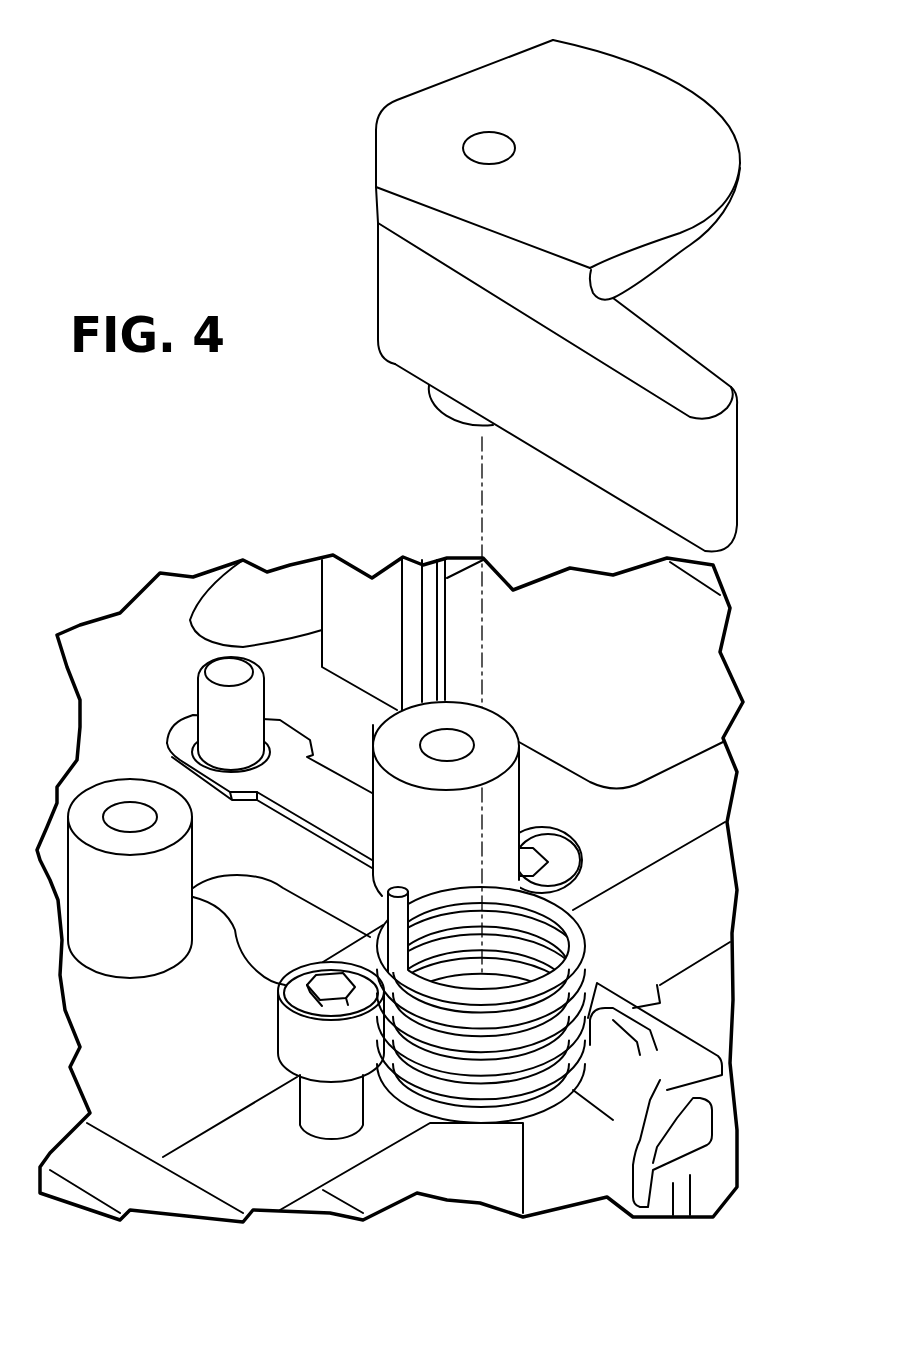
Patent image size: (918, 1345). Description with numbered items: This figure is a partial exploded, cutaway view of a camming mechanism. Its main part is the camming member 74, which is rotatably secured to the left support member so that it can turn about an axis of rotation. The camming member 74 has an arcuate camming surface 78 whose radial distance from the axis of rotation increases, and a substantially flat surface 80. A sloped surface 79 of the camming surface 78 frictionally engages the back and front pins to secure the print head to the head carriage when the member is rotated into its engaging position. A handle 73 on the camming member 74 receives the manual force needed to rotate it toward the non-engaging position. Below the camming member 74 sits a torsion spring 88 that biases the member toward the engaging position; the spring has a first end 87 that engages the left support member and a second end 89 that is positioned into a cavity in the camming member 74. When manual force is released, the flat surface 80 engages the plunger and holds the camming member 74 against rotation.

The camming member 74 is at (350, 338).
The substantially flat surface 80 is at (470, 68).
The arcuate camming surface 78 is at (693, 85).
The sloped surface 79 is at (710, 230).
The handle 73 is at (688, 373).
The torsion spring 88 is at (570, 987).
The second end 89 is at (397, 912).
The first end 87 is at (650, 1017).